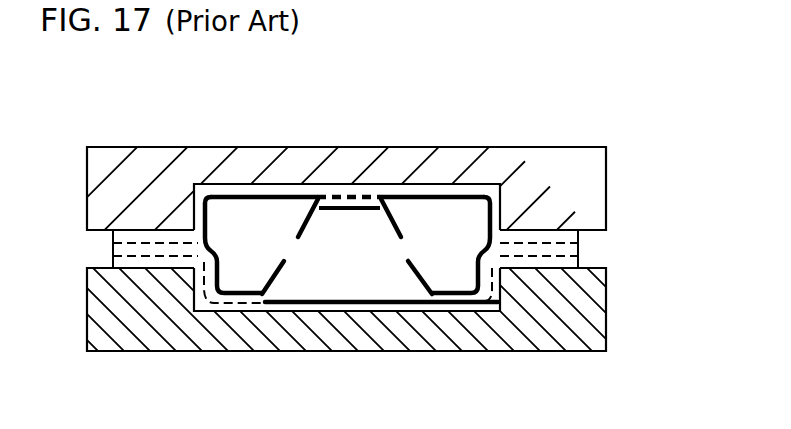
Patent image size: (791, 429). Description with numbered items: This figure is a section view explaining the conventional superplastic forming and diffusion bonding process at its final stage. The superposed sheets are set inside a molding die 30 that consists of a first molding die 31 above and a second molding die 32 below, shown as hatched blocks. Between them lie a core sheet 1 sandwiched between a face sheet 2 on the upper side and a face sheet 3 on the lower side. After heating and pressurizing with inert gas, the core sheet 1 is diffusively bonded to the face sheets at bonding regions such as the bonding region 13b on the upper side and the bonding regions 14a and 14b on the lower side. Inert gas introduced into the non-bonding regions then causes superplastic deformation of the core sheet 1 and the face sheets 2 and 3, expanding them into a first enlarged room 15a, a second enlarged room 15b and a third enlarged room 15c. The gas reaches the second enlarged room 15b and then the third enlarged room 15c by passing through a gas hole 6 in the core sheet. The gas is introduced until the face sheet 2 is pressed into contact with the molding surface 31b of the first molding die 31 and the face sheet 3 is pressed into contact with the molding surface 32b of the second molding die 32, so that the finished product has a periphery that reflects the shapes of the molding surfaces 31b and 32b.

The molding die 30 is at (395, 214).
The first molding die 31 is at (395, 214).
The second molding die 32 is at (395, 254).
The molding surface 31b is at (486, 186).
The molding surface 32b is at (468, 302).
The core sheet 1 is at (578, 246).
The face sheet 2 is at (391, 159).
The face sheet 3 is at (388, 248).
The gas hole 6 is at (347, 307).
The bonding region 13b is at (365, 196).
The bonding region 14a is at (235, 305).
The bonding region 14b is at (467, 303).
The first enlarged room 15a is at (232, 213).
The second enlarged room 15b is at (333, 228).
The third enlarged room 15c is at (449, 213).